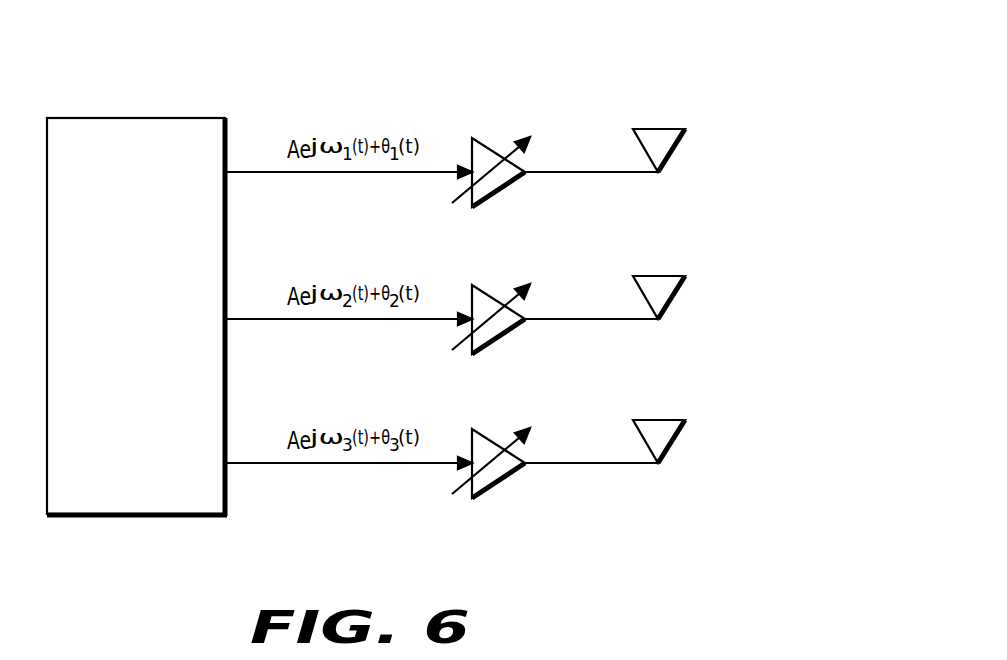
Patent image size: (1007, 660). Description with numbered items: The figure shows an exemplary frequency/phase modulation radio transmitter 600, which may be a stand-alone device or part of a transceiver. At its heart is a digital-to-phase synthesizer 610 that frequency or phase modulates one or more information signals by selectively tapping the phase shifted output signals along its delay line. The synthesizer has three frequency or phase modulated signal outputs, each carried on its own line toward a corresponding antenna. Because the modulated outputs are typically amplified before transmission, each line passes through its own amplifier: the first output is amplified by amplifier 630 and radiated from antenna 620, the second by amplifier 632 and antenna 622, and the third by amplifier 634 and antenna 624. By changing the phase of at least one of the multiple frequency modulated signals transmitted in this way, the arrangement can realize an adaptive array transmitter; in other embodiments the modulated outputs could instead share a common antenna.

The radio transmitter 600 is at (680, 57).
The digital-to-phase synthesizer 610 is at (135, 118).
The antenna 620 is at (676, 151).
The antenna 622 is at (676, 298).
The antenna 624 is at (676, 442).
The amplifier 630 is at (500, 195).
The amplifier 632 is at (500, 342).
The amplifier 634 is at (500, 486).